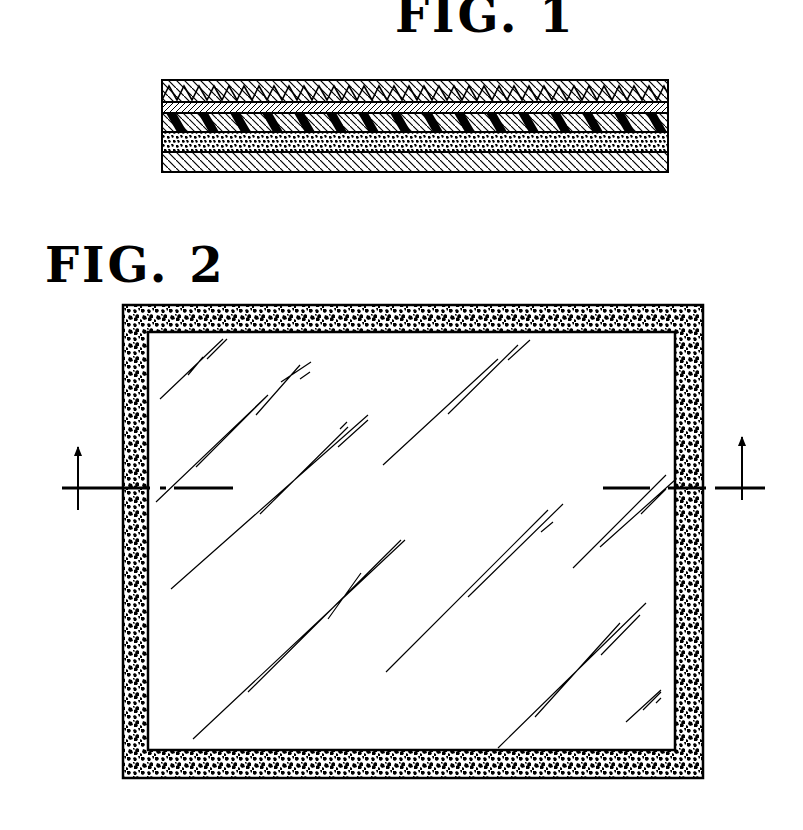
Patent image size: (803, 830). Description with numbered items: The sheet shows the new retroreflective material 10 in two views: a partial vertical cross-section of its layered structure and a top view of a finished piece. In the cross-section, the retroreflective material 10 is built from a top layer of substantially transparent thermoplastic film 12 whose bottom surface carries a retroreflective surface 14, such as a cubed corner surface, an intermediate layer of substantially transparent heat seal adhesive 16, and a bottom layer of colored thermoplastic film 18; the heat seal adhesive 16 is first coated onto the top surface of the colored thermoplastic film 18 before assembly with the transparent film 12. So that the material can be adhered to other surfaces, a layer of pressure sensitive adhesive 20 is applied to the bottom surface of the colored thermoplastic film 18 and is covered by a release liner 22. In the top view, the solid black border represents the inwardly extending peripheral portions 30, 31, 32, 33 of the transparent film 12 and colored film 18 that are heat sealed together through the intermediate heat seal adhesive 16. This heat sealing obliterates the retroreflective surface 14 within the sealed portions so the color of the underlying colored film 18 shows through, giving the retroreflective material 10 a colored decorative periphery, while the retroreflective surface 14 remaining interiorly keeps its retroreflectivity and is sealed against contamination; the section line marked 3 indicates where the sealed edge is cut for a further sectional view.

In FIG. 1, the retroreflective material 10 is at (262, 64).
In FIG. 2, the retroreflective material 10 is at (683, 294).
In FIG. 1, the substantially transparent thermoplastic film 12 is at (632, 80).
In FIG. 1, the retroreflective surface 14 is at (163, 104).
In FIG. 1, the heat seal adhesive 16 is at (668, 104).
In FIG. 1, the colored thermoplastic film 18 is at (668, 118).
In FIG. 1, the pressure sensitive adhesive 20 is at (668, 136).
In FIG. 1, the release liner 22 is at (660, 157).
In FIG. 2, the peripheral portion 30 is at (476, 283).
In FIG. 2, the peripheral portion 31 is at (700, 545).
In FIG. 2, the peripheral portion 32 is at (440, 778).
In FIG. 2, the peripheral portion 33 is at (122, 542).
In FIG. 2, the section line 3- 3 is at (412, 460).